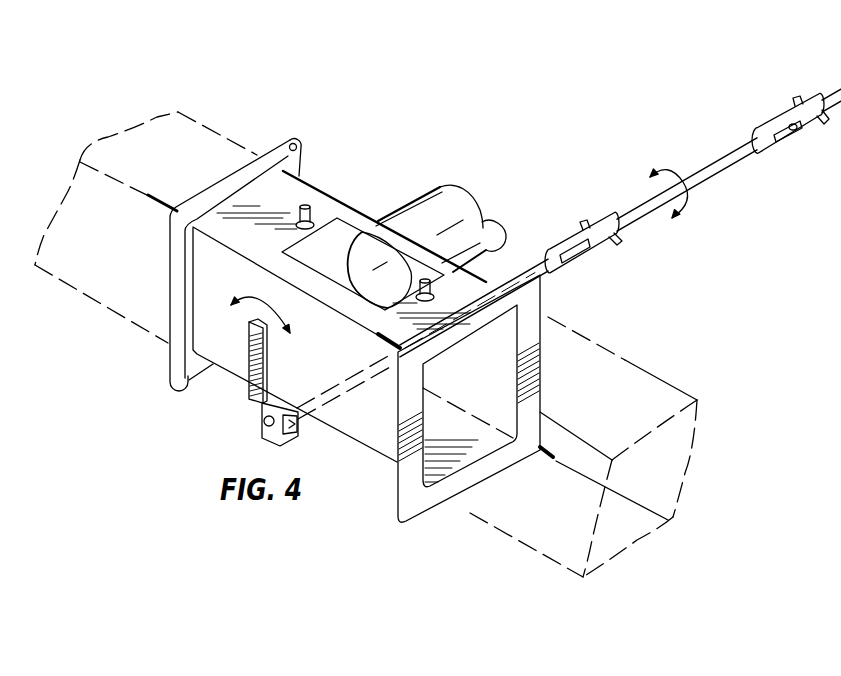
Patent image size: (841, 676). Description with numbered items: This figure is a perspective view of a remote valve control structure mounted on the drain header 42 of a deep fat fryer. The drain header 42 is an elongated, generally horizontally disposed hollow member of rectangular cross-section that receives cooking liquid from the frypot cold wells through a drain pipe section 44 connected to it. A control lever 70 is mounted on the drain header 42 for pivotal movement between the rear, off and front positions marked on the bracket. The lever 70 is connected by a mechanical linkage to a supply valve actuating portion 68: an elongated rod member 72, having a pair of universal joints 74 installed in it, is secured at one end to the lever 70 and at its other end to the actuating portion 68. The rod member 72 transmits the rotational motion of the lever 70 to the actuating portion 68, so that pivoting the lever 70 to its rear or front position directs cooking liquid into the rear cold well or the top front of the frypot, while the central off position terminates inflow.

The drain header 42 is at (230, 138).
The drain pipe section 44 is at (437, 187).
The supply valve actuating portion 68 is at (826, 97).
The control lever 70 is at (268, 360).
The rod member 72 is at (658, 206).
The universal joint 74 is at (573, 240).